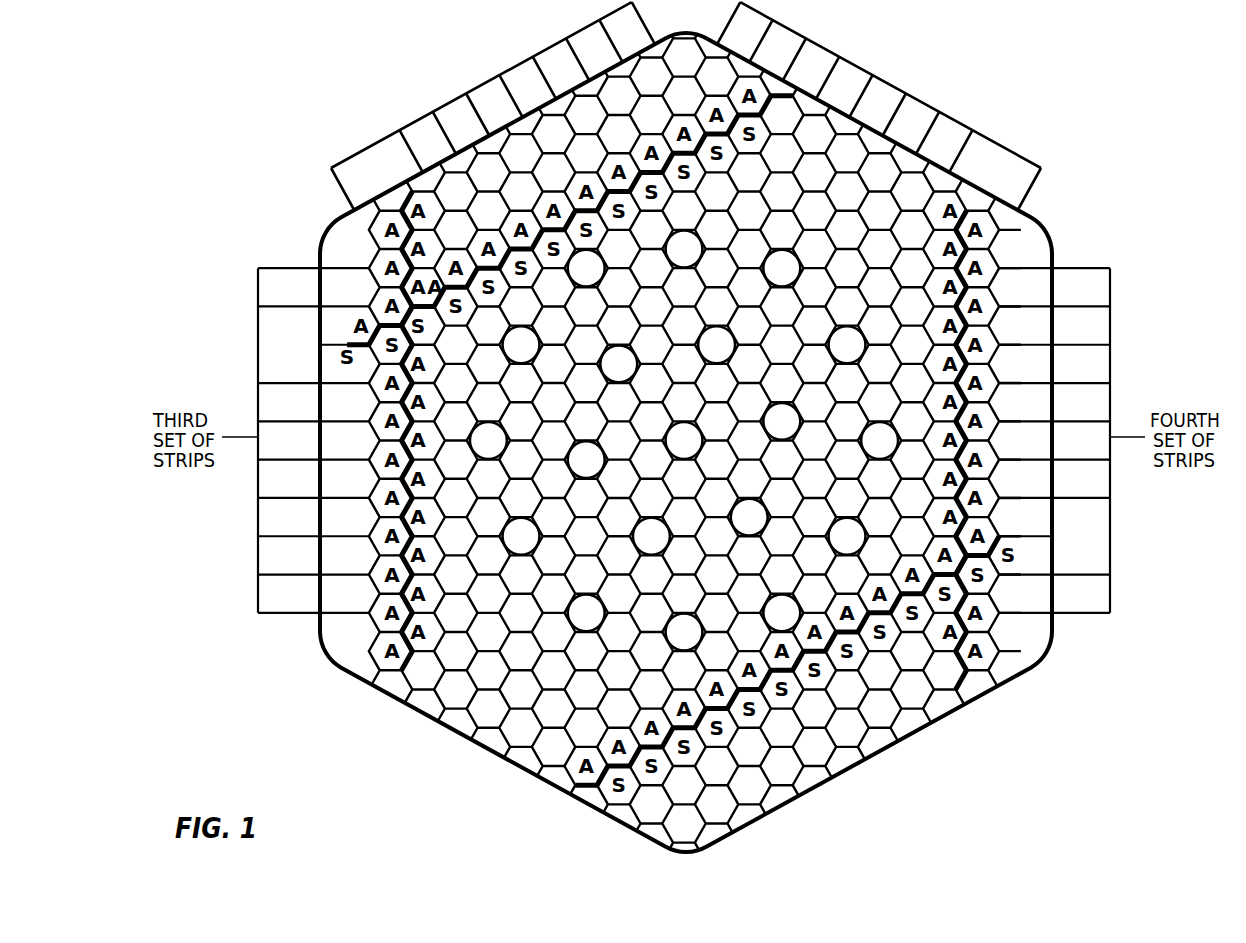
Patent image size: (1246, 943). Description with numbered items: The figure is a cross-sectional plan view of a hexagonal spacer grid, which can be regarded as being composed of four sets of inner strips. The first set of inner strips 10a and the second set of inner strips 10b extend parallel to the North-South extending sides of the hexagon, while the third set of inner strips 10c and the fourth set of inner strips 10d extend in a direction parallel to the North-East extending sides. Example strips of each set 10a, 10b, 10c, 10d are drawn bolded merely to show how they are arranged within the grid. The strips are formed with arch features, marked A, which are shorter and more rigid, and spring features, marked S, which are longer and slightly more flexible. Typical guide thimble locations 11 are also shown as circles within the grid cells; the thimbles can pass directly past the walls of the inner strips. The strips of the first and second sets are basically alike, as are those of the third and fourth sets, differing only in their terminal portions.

The first set of inner strips 10a is at (465, 175).
The second set of inner strips 10b is at (852, 155).
The third set of inner strips 10c is at (458, 705).
The fourth set of inner strips 10d is at (935, 665).
The guide thimble locations 11 is at (670, 640).